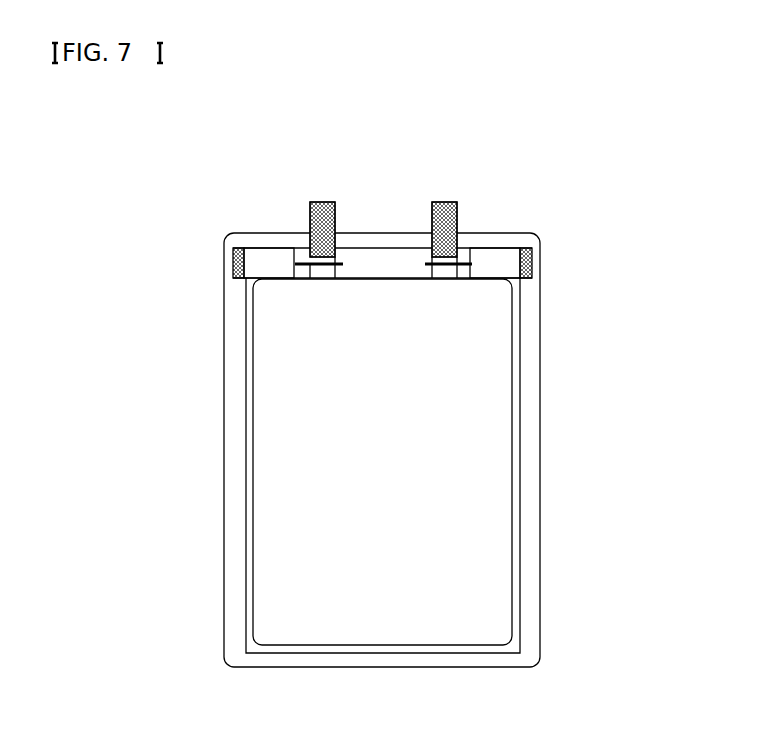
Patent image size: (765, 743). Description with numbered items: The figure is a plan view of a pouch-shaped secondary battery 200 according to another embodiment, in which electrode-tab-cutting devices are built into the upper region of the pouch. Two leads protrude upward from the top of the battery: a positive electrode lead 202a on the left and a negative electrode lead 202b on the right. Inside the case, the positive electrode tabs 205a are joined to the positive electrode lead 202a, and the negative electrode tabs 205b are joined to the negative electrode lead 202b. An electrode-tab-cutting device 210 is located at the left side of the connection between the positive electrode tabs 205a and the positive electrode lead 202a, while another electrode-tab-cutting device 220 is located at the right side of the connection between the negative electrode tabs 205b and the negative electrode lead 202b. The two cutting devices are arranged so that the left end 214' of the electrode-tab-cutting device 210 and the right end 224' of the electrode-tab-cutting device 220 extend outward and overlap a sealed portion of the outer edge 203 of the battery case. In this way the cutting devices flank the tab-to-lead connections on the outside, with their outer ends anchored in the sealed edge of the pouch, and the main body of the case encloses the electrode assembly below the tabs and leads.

The pouch-shaped secondary battery 200 is at (125, 172).
The outer edge of battery case 203 is at (237, 490).
The electrode-tab-cutting device 210 is at (275, 251).
The left end of electrode-tab-cutting device 214' is at (194, 272).
The electrode-tab-cutting device 220 is at (490, 248).
The right end of electrode-tab-cutting device 224' is at (580, 263).
The positive electrode lead 202a is at (323, 202).
The negative electrode lead 202b is at (450, 202).
The positive electrode tabs 205a is at (337, 272).
The negative electrode tabs 205b is at (477, 279).